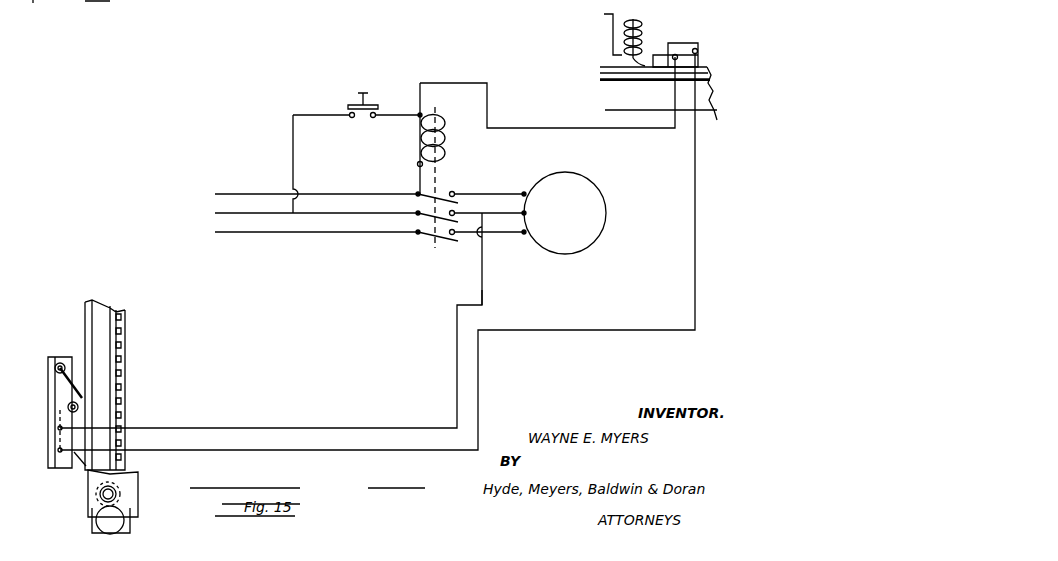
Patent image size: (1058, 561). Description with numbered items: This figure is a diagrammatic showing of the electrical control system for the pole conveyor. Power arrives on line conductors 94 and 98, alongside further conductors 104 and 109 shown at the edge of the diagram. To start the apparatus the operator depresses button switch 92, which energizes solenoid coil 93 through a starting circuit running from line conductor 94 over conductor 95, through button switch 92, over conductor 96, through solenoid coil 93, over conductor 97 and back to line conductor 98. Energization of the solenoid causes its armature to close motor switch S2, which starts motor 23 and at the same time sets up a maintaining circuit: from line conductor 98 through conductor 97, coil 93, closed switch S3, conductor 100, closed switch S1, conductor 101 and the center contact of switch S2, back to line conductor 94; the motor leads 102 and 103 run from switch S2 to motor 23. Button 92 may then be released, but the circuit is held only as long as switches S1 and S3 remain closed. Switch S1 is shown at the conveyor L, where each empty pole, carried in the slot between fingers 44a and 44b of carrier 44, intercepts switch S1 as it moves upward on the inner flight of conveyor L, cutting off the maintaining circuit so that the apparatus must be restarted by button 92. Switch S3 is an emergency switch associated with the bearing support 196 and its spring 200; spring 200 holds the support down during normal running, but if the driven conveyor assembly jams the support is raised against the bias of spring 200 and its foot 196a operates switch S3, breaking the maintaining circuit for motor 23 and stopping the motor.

The support member 109 is at (65, 12).
The line conductor 98 is at (253, 194).
The line conductor 94 is at (232, 213).
The power line conductor 104 is at (245, 233).
The conductor 95 is at (293, 125).
The button switch 92 is at (362, 93).
The conductor 96 is at (400, 106).
The solenoid coil 93 is at (446, 138).
The conductor 97 is at (417, 170).
The motor switch S2 is at (446, 193).
The motor 23 is at (609, 205).
The conductor 102 is at (504, 210).
The conductor 103 is at (513, 243).
The conductor 101 is at (478, 288).
The conductor 100 is at (697, 131).
The switch S3 is at (699, 52).
The support 196 is at (613, 33).
The spring 200 is at (642, 21).
The foot 196a is at (646, 62).
The conveyor L is at (127, 352).
The switch S1 is at (48, 430).
The carrier 44 is at (138, 490).
The finger 44a is at (95, 490).
The finger 44b is at (92, 512).